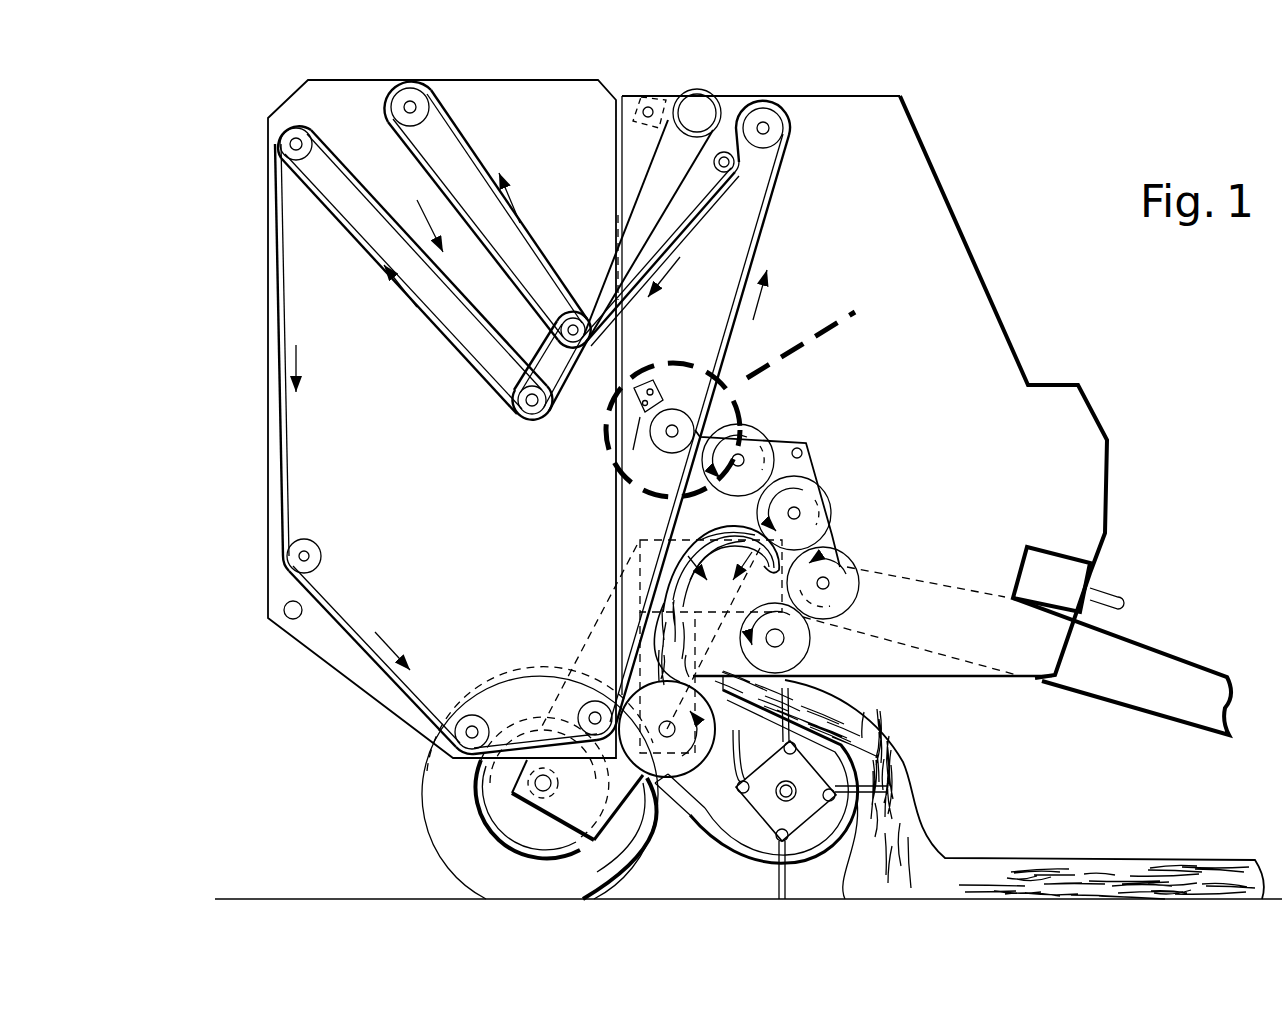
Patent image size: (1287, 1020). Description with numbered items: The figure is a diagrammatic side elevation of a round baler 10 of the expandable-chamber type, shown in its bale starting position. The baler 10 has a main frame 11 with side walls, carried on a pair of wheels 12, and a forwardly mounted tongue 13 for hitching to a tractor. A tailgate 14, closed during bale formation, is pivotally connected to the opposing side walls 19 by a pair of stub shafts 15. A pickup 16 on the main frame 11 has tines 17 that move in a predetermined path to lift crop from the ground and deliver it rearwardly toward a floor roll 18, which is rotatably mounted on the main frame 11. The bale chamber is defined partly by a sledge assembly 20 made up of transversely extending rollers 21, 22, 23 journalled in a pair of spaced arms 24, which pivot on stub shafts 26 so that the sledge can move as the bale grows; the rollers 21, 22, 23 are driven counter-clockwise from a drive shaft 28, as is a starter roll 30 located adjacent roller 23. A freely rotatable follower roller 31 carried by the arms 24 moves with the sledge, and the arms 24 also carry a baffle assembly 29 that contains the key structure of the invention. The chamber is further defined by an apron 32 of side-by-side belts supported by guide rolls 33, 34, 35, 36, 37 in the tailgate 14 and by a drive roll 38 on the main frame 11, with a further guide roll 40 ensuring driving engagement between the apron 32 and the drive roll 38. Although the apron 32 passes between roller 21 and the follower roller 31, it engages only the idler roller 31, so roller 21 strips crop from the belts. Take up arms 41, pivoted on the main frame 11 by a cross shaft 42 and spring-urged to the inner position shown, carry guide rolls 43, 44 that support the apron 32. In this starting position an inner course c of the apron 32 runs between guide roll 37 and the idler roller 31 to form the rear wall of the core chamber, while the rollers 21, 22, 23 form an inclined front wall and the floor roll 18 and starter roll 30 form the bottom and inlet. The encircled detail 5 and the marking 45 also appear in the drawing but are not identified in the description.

The round baler 10 is at (968, 148).
The main frame 11 is at (639, 545).
The wheels 12 is at (452, 820).
The tongue 13 is at (1160, 678).
The tailgate 14 is at (553, 80).
The stub shafts 15 is at (651, 106).
The pickup 16 is at (925, 752).
The tines 17 is at (728, 858).
The floor roll 18 is at (620, 853).
The side walls 19 is at (874, 242).
The sledge assembly 20 is at (836, 424).
The roller 21 is at (752, 432).
The roller 22 is at (802, 513).
The roller 23 is at (852, 592).
The arms 24 is at (803, 453).
The stub shafts 26 is at (828, 583).
The drive shaft 28 is at (1100, 592).
The baffle assembly 29 is at (660, 383).
The starter roll 30 is at (790, 645).
The follower roller 31 is at (672, 455).
The apron 32 is at (268, 498).
The guide roll 33 is at (410, 84).
The guide roll 34 is at (298, 162).
The guide roll 35 is at (322, 553).
The guide roll 36 is at (472, 713).
The guide roll 37 is at (595, 699).
The drive roll 38 is at (784, 129).
The guide roll 40 is at (716, 172).
The take up arms 41 is at (657, 160).
The cross shaft 42 is at (712, 100).
The guide roll 43 is at (540, 414).
The guide roll 44 is at (573, 316).
The crop stream 45 is at (677, 553).
The detail circle 5 is at (744, 394).
The inner course c is at (640, 628).